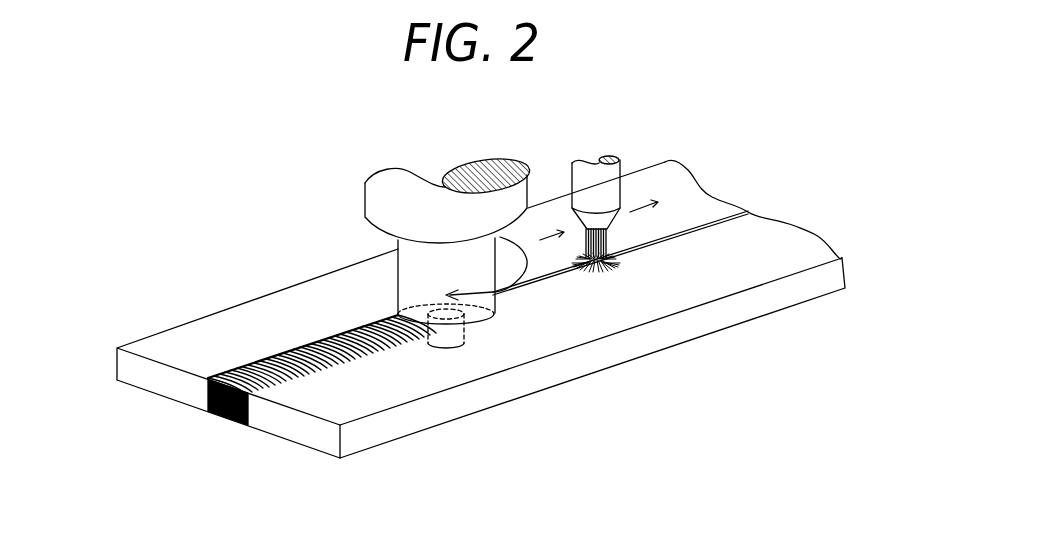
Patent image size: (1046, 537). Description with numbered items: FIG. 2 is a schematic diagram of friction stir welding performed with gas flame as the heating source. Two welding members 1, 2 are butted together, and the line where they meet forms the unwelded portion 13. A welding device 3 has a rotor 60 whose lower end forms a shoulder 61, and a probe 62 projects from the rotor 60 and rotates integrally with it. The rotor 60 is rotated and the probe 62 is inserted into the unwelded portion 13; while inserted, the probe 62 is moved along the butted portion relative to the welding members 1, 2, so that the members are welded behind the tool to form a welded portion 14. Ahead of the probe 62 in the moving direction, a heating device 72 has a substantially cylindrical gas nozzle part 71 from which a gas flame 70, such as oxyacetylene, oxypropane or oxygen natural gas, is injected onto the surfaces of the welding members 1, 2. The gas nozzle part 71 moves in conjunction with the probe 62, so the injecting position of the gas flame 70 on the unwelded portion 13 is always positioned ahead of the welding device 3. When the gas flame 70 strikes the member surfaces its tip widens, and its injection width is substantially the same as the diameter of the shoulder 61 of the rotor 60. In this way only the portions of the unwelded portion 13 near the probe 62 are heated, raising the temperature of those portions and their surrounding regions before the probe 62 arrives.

The welding member 1 is at (167, 383).
The welding member 2 is at (285, 427).
The unwelded portion 13 is at (748, 212).
The welded portion 14 is at (224, 418).
The welding device 3 is at (376, 202).
The rotor 60 is at (398, 247).
The shoulder 61 is at (381, 318).
The probe 62 is at (468, 348).
The gas flame 70 is at (612, 266).
The gas nozzle part 71 is at (578, 178).
The heating device 72 is at (630, 149).